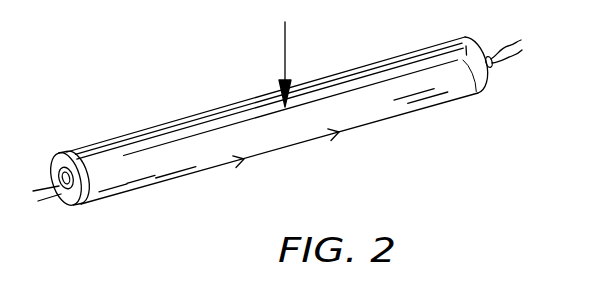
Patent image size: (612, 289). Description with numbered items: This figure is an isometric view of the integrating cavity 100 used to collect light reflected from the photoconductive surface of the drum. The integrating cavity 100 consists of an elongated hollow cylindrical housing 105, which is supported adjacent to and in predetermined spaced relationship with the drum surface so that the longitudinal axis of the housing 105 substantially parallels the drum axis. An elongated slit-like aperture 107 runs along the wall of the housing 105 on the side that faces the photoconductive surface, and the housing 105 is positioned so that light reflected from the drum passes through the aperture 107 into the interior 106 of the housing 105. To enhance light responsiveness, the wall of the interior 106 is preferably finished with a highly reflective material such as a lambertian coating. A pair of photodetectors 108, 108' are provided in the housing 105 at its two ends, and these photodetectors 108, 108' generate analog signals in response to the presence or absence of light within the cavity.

The integrating cavity 100 is at (424, 120).
The housing 105 is at (238, 164).
The interior 106 is at (338, 134).
The aperture 107 is at (176, 128).
The photodetector 108 is at (59, 216).
The photodetector 108' is at (533, 61).